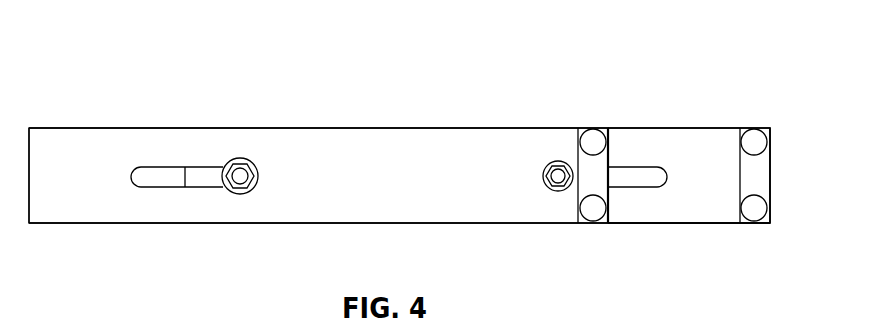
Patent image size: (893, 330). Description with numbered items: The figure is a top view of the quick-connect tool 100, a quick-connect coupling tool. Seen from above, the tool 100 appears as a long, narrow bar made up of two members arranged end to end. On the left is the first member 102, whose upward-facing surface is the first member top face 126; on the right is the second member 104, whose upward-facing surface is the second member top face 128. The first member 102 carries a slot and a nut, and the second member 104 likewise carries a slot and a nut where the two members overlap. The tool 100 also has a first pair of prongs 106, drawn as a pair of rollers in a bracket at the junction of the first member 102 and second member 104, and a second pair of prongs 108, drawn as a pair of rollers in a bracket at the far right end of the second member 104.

The quick-connect tool 100 is at (729, 92).
The first member 102 is at (218, 128).
The second member 104 is at (665, 127).
The first pair of prongs 106 is at (593, 202).
The second pair of prongs 108 is at (752, 202).
The first member top face 126 is at (57, 195).
The second member top face 128 is at (683, 190).